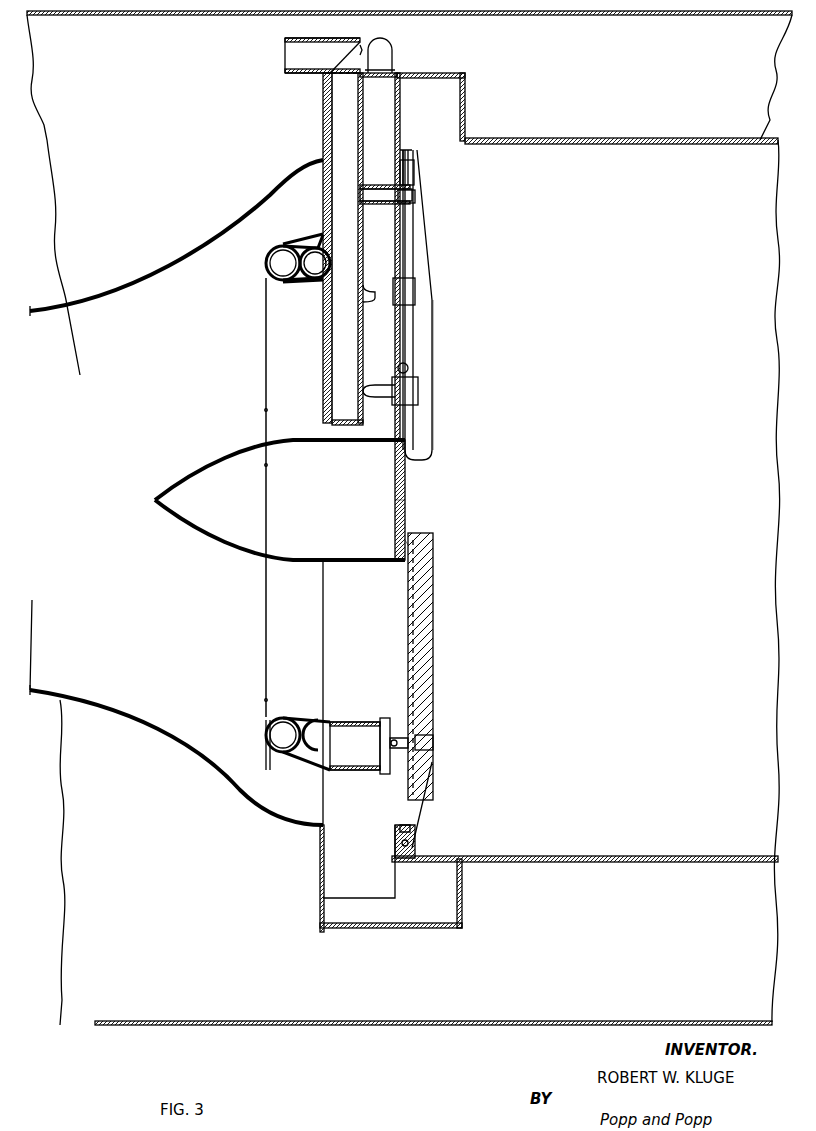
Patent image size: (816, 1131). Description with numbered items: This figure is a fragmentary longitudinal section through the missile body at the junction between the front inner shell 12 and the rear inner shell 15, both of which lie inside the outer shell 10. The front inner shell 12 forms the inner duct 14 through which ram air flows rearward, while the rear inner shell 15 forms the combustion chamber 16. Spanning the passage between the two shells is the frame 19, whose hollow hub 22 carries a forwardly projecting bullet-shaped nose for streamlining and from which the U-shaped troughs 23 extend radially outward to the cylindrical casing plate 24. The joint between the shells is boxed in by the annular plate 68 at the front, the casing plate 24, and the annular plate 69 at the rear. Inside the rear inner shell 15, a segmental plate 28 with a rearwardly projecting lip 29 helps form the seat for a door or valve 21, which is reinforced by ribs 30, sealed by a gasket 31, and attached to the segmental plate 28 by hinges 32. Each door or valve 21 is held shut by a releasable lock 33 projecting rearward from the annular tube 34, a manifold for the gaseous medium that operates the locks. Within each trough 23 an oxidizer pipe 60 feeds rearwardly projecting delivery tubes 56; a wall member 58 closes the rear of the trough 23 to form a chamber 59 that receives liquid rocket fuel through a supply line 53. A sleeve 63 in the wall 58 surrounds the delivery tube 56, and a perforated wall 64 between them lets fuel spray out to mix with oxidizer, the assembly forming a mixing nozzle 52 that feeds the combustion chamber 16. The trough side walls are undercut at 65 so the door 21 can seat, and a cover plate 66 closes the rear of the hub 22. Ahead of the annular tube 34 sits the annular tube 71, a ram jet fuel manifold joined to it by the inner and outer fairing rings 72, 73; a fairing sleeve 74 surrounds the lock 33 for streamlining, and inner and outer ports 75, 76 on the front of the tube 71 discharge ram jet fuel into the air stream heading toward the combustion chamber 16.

The outer shell 10 is at (628, 15).
The front inner shell 12 is at (225, 198).
The inner duct 14 is at (80, 375).
The rear inner shell 15 is at (557, 138).
The combustion chamber 16 is at (714, 518).
The frame 19 is at (416, 502).
The door or valve 21 is at (432, 343).
The hollow hub 22 is at (205, 548).
The U-shaped trough 23 is at (323, 198).
The cylindrical casing plate 24 is at (426, 73).
The segmental plate 28 is at (395, 845).
The lip 29 is at (403, 828).
The reinforcing rib 30 is at (433, 408).
The sealing gasket 31 is at (407, 568).
The hinge 32 is at (412, 845).
The releasable lock 33 is at (388, 711).
The annular tube 34 is at (300, 720).
The mixing nozzle 52 is at (420, 210).
The supply line 53 is at (385, 47).
The delivery tube 56 is at (375, 185).
The wall member 58 is at (418, 375).
The chamber 59 is at (379, 356).
The oxidizer pipe 60 is at (366, 256).
The sleeve 63 is at (414, 170).
The perforated wall 64 is at (415, 195).
The undercut 65 is at (404, 150).
The cover plate 66 is at (405, 515).
The annular plate 68 is at (323, 125).
The annular plate 69 is at (465, 105).
The annular tube 71 is at (266, 263).
The inner fairing ring 72 is at (290, 280).
The outer fairing ring 73 is at (297, 245).
The fairing sleeve 74 is at (350, 722).
The inner ports 75 is at (268, 668).
The outer ports 76 is at (268, 768).